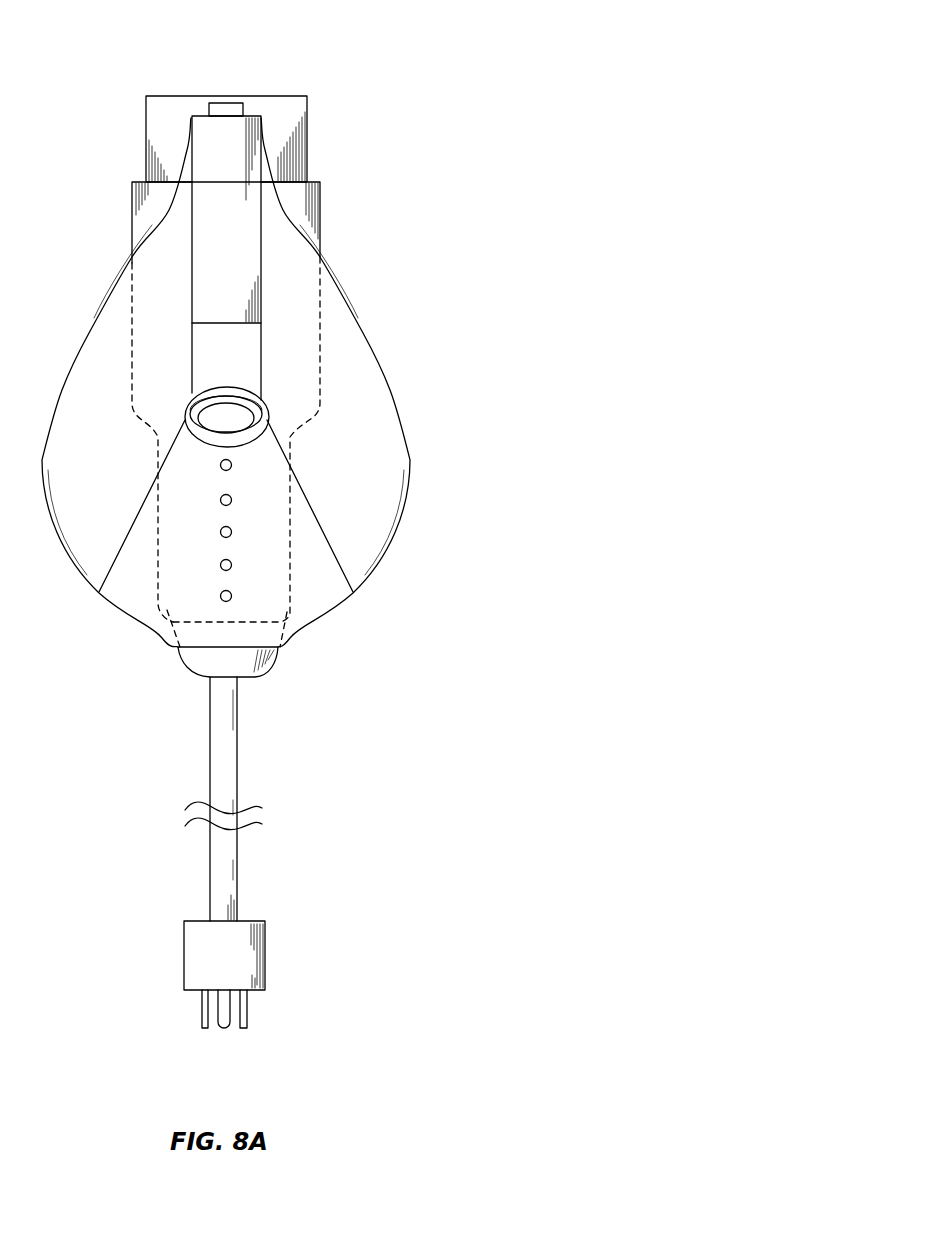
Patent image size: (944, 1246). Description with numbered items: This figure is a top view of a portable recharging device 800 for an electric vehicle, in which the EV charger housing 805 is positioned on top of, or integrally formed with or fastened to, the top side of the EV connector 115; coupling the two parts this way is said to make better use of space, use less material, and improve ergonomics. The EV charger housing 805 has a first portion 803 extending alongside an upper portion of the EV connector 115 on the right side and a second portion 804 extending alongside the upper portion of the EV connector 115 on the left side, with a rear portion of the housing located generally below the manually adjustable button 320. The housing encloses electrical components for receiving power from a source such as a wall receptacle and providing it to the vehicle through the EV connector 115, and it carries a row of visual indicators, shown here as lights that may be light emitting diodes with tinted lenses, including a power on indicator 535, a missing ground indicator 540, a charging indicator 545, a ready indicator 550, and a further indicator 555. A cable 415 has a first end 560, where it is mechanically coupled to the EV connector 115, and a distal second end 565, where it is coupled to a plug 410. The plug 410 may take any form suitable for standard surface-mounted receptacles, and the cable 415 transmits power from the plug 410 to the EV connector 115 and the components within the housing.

The portable recharging device 800 is at (493, 48).
The EV connector 115 is at (132, 198).
The first portion 803 is at (286, 240).
The second portion 804 is at (162, 264).
The EV charger housing 805 is at (293, 272).
The manually adjustable button 320 is at (236, 428).
The power on indicator 535 is at (232, 466).
The missing ground indicator 540 is at (221, 500).
The charging indicator 545 is at (232, 533).
The ready indicator 550 is at (221, 565).
The visual indicator 555 is at (219, 597).
The first end 560 is at (238, 679).
The cable 415 is at (222, 762).
The second end 565 is at (238, 918).
The plug 410 is at (199, 963).